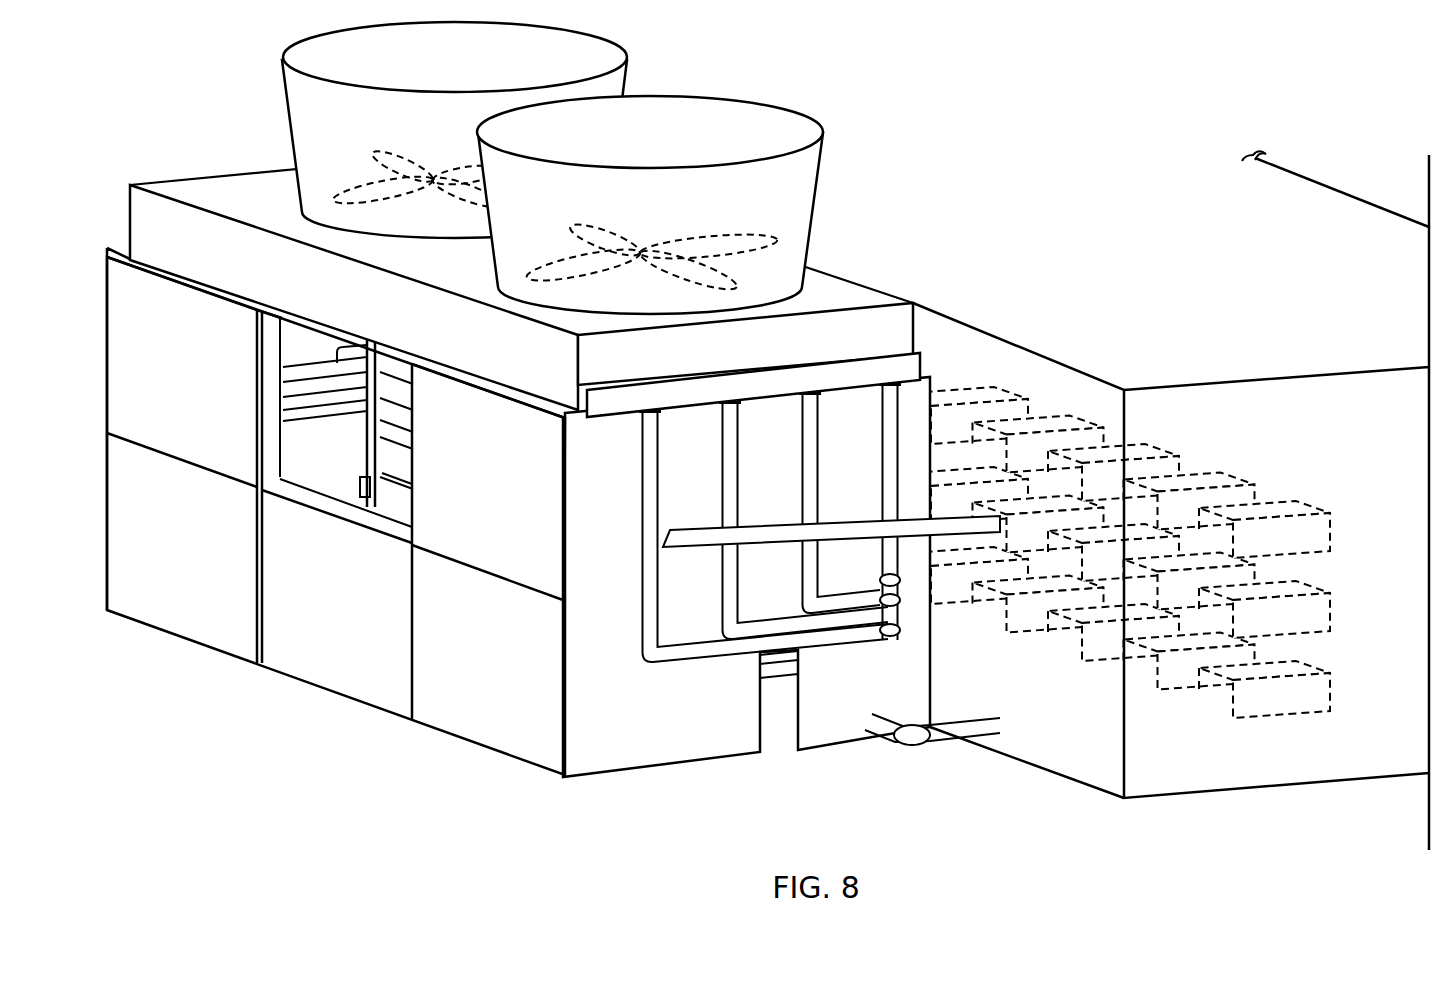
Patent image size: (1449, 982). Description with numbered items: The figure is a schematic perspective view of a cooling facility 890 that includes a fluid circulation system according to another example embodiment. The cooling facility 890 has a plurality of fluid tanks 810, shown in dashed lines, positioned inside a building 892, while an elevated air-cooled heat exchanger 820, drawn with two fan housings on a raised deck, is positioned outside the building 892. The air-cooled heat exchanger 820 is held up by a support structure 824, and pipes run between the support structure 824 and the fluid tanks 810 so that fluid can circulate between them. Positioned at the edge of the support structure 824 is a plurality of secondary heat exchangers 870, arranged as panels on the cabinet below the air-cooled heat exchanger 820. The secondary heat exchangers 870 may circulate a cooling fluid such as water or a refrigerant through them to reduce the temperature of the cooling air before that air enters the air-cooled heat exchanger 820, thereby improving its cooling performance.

The fluid tanks 810 is at (1203, 445).
The air-cooled heat exchanger 820 is at (387, 323).
The support structure 824 is at (367, 453).
The secondary heat exchangers 870 is at (167, 390).
The cooling facility 890 is at (933, 135).
The building 892 is at (1255, 373).